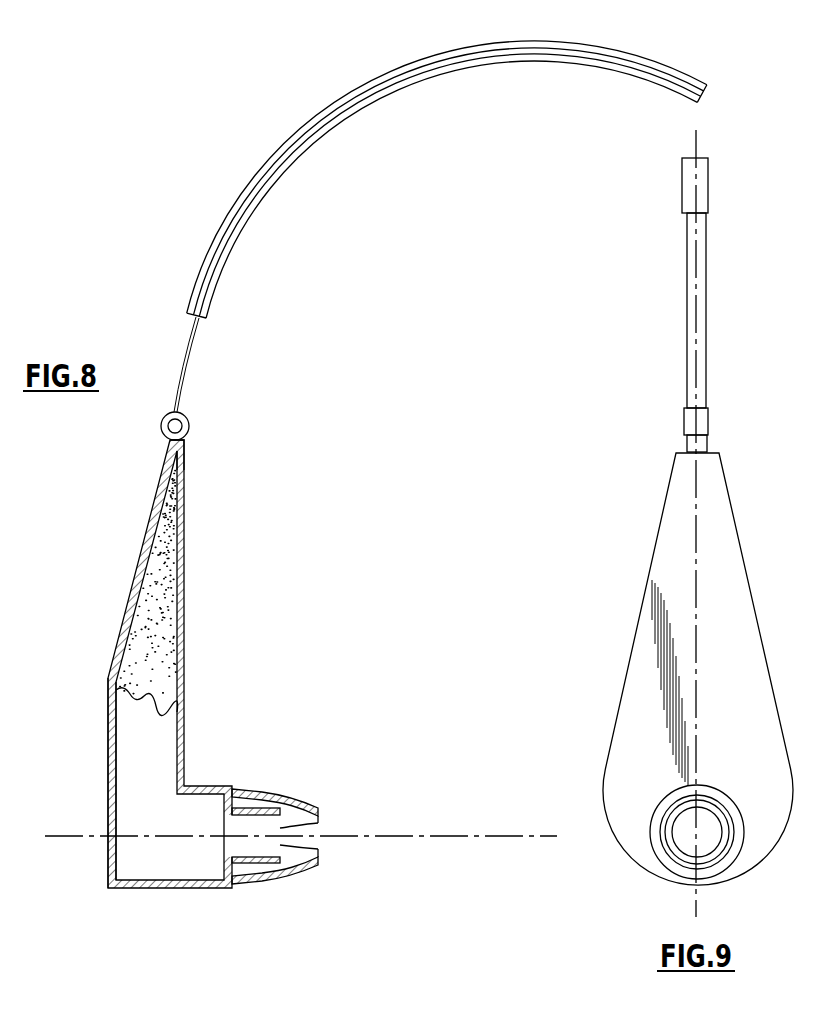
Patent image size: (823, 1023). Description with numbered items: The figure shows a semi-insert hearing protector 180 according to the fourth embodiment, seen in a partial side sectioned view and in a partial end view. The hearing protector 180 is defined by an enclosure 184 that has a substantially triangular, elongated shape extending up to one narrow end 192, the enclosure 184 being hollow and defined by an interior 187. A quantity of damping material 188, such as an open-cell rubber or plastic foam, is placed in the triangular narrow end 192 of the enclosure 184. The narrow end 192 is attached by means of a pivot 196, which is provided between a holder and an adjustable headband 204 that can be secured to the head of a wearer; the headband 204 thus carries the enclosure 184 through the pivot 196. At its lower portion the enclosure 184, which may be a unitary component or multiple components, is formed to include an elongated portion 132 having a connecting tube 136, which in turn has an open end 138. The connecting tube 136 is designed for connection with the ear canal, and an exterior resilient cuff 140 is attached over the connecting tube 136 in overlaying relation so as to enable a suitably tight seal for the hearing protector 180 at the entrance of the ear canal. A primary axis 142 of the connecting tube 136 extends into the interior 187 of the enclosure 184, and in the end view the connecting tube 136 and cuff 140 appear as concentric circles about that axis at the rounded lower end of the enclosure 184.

In FIG. 8, the elongated portion 132 is at (213, 790).
In FIG. 9, the elongated portion 132 is at (716, 787).
In FIG. 8, the connecting tube 136 is at (270, 808).
In FIG. 9, the connecting tube 136 is at (722, 815).
In FIG. 8, the open end 138 is at (318, 827).
In FIG. 8, the exterior resilient cuff 140 is at (296, 862).
In FIG. 9, the exterior resilient cuff 140 is at (728, 857).
In FIG. 8, the primary axis 142 is at (428, 838).
In FIG. 8, the hearing protector 180 is at (99, 557).
In FIG. 9, the hearing protector 180 is at (618, 554).
In FIG. 8, the enclosure 184 is at (184, 722).
In FIG. 9, the enclosure 184 is at (742, 548).
In FIG. 8, the interior 187 is at (122, 764).
In FIG. 8, the damping material 188 is at (163, 563).
In FIG. 8, the narrow end 192 is at (184, 452).
In FIG. 8, the pivot 196 is at (188, 422).
In FIG. 9, the pivot 196 is at (708, 428).
In FIG. 8, the adjustable headband 204 is at (340, 118).
In FIG. 9, the adjustable headband 204 is at (708, 172).